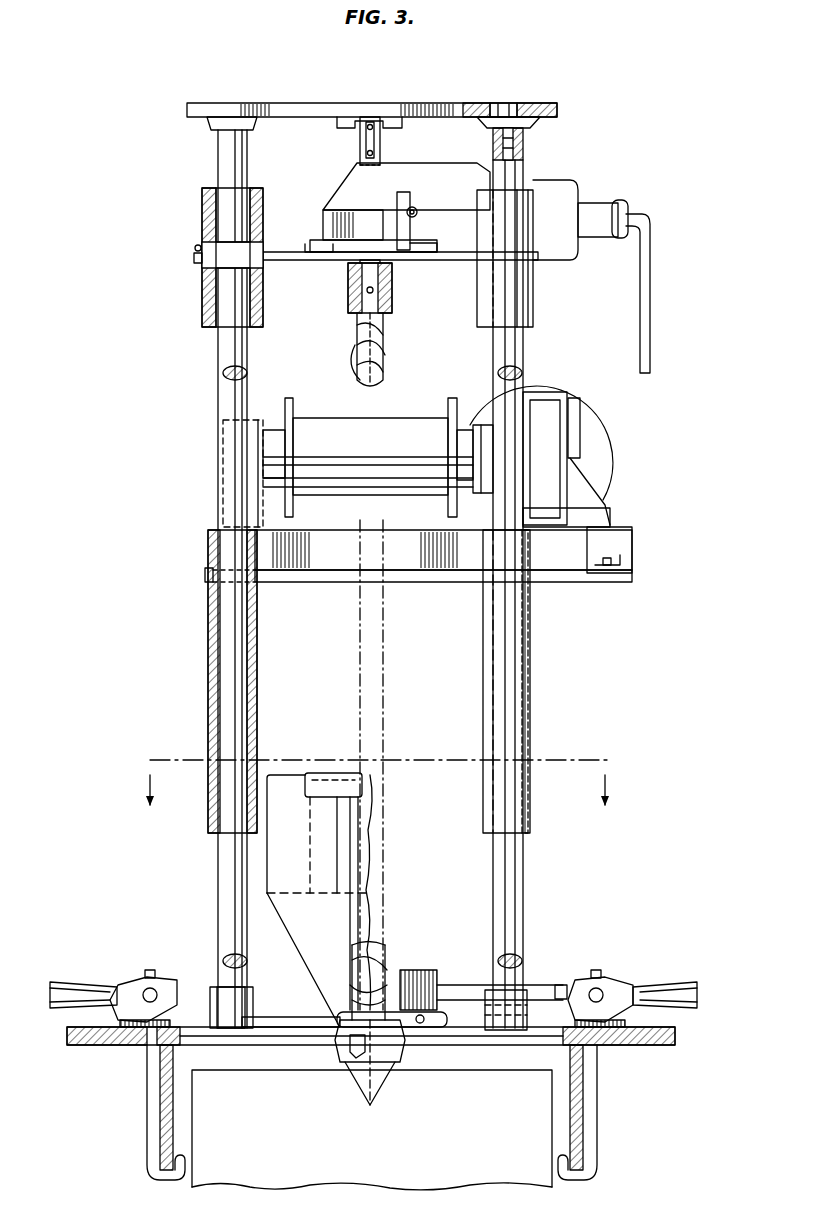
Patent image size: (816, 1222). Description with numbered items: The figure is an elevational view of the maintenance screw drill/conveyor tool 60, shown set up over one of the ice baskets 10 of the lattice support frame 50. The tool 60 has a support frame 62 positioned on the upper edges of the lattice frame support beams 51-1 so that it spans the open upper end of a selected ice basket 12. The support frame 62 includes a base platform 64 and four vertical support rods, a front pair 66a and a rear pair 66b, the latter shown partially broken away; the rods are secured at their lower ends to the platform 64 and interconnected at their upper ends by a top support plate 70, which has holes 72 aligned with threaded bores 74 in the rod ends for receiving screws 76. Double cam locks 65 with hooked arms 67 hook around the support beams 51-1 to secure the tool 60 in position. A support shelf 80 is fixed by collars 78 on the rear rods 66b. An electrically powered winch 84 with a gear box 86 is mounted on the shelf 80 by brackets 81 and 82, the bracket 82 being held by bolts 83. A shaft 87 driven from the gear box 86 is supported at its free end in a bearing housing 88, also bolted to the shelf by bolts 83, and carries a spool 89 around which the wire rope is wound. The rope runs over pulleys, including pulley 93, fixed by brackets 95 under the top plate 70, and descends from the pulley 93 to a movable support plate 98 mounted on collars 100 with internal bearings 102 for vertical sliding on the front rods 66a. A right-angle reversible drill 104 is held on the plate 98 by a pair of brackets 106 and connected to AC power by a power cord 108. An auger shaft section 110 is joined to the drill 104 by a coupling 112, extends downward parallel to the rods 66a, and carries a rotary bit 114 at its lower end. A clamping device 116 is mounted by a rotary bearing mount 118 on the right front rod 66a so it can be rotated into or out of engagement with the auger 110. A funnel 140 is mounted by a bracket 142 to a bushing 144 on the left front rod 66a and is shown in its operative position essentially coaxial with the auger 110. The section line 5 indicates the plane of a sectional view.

The section line 5- 5 is at (376, 784).
The ice basket 10 is at (443, 1149).
The ice basket 12 is at (552, 1115).
The lattice support frame 50 is at (105, 1085).
The support beam 51-1 is at (165, 1130).
The maintenance screw drill/conveyor tool 60 is at (140, 130).
The support frame 62 is at (150, 725).
The base platform 64 is at (665, 1045).
The double cam lock 65 is at (120, 980).
The front pair of support rods 66a is at (225, 353).
The rear pair of support rods 66b is at (223, 872).
The hooked arm 67 is at (192, 1165).
The top support plate 70 is at (437, 103).
The hole 72 is at (525, 104).
The threaded bore 74 is at (523, 140).
The screw 76 is at (505, 103).
The collar 78 is at (208, 657).
The support shelf 80 is at (625, 582).
The bracket 81 is at (600, 500).
The bracket 82 is at (473, 512).
The bolt 83 is at (607, 558).
The electrically powered winch 84 is at (555, 388).
The gear box 86 is at (550, 470).
The shaft 87 is at (480, 425).
The bearing housing 88 is at (222, 432).
The spool 89 is at (418, 448).
The pulley 93 is at (362, 148).
The bracket 95 is at (337, 122).
The movable support plate 98 is at (283, 258).
The collar 100 is at (202, 200).
The internal bearing 102 is at (196, 262).
The right-angle reversible drill 104 is at (465, 194).
The bracket 106 is at (320, 244).
The power cord 108 is at (650, 310).
The auger shaft section 110 is at (392, 355).
The coupling 112 is at (430, 299).
The rotary bit 114 is at (385, 1080).
The clamping device 116 is at (548, 985).
The rotary bearing mount 118 is at (572, 985).
The funnel 140 is at (300, 773).
The bracket 142 is at (297, 1017).
The bushing 144 is at (220, 990).